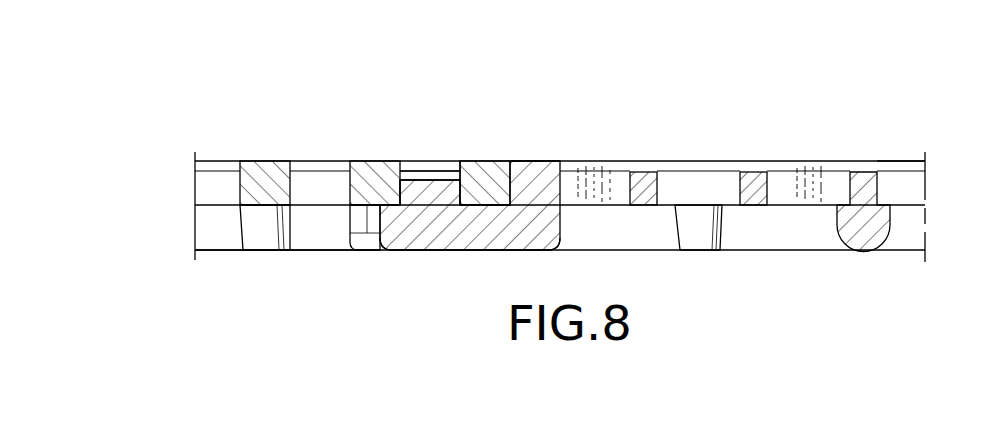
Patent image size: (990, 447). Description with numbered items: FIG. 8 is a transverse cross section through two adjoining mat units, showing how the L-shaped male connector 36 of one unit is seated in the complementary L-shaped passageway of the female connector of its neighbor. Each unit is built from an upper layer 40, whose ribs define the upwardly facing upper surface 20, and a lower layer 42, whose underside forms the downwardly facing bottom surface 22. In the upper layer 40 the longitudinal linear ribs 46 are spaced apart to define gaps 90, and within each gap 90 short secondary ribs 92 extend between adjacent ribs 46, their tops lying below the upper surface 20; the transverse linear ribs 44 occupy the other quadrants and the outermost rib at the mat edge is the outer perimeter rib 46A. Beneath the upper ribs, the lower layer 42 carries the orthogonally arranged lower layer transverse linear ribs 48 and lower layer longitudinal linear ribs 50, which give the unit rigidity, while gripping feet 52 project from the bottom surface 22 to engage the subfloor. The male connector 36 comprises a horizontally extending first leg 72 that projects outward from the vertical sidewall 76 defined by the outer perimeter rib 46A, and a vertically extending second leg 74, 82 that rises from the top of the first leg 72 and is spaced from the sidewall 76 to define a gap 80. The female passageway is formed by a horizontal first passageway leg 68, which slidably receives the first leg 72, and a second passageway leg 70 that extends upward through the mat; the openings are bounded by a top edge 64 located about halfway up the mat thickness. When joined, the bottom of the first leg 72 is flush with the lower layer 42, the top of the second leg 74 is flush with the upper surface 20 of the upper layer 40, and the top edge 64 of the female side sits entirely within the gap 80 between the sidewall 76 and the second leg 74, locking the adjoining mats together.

The upper surface 20 is at (533, 207).
The upper layer 40 is at (218, 160).
The bottom surface 22 is at (560, 286).
The lower layer 42 is at (771, 253).
The transverse linear ribs 44 is at (893, 162).
The longitudinal linear ribs 46 is at (258, 162).
The outer perimeter rib 46A is at (498, 177).
The lower layer transverse linear ribs 48 is at (207, 234).
The lower layer longitudinal linear ribs 50 is at (862, 247).
The gripping feet 52 is at (264, 248).
The top edge 64 is at (515, 215).
The first passageway leg 68 is at (477, 240).
The second passageway leg 70 is at (442, 186).
The first horizontal leg 72 is at (413, 252).
The male connector 36 is at (423, 267).
The second vertical leg 74 is at (390, 127).
The interface 82 is at (428, 180).
The vertical sidewall 76 is at (505, 186).
The gap 80 is at (413, 173).
The gaps 90 is at (337, 185).
The secondary ribs 92 is at (207, 190).